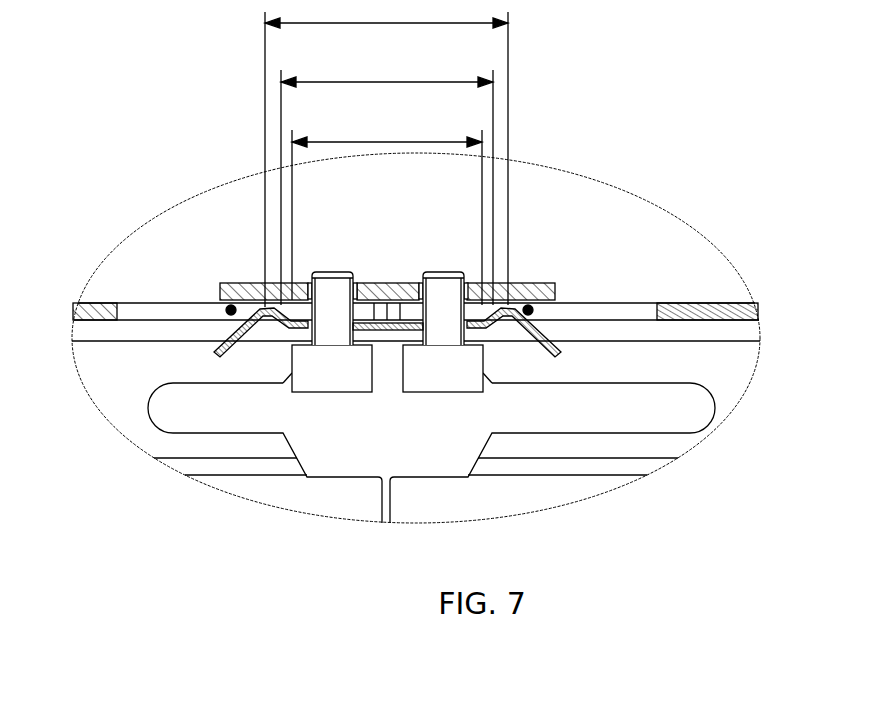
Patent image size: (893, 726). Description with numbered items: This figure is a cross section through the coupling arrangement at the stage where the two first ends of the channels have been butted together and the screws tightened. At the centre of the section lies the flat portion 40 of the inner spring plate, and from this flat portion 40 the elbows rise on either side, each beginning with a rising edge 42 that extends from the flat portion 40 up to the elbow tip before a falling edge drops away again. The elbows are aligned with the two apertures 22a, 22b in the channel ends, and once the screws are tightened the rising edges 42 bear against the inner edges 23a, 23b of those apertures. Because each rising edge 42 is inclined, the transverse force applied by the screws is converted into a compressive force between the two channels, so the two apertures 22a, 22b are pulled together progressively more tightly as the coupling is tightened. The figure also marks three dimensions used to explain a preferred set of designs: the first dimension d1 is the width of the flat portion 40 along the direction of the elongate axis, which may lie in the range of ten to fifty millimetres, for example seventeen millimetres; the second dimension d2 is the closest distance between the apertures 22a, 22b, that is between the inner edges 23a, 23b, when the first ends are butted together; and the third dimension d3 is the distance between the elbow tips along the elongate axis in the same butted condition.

The aperture 22a is at (231, 310).
The aperture 22b is at (528, 310).
The inner edge 23a is at (280, 308).
The inner edge 23b is at (492, 307).
The flat portion 40 is at (398, 330).
The rising edge 42 is at (273, 322).
The first dimension d1 is at (387, 210).
The second dimension d2 is at (387, 180).
The third dimension d3 is at (386, 153).